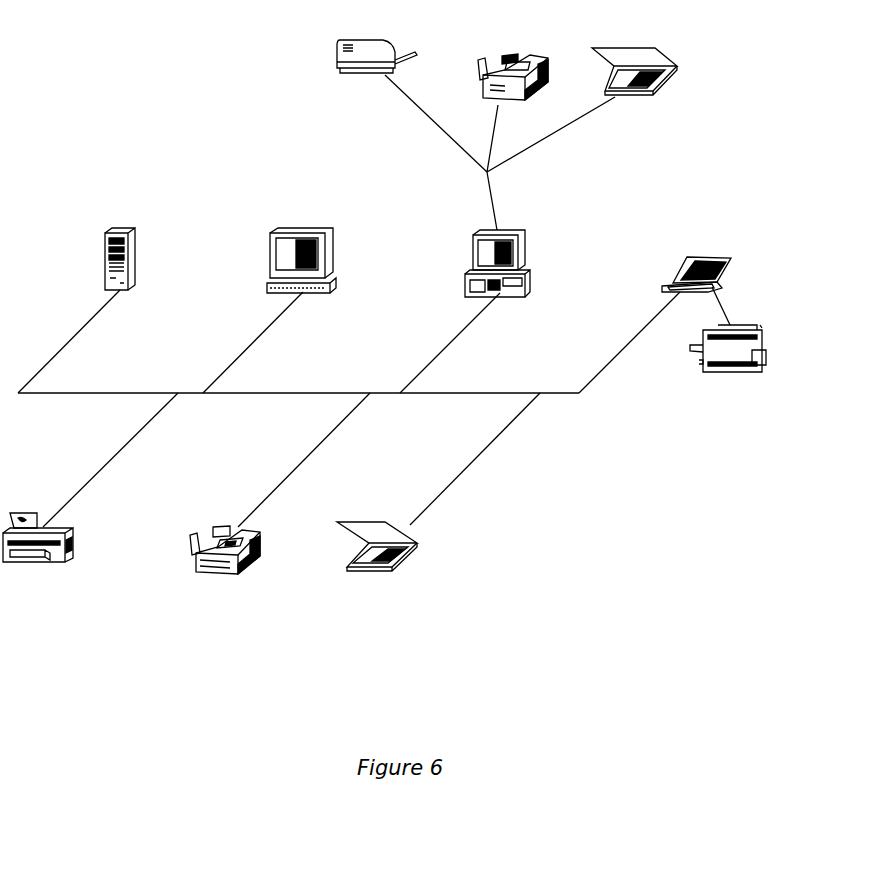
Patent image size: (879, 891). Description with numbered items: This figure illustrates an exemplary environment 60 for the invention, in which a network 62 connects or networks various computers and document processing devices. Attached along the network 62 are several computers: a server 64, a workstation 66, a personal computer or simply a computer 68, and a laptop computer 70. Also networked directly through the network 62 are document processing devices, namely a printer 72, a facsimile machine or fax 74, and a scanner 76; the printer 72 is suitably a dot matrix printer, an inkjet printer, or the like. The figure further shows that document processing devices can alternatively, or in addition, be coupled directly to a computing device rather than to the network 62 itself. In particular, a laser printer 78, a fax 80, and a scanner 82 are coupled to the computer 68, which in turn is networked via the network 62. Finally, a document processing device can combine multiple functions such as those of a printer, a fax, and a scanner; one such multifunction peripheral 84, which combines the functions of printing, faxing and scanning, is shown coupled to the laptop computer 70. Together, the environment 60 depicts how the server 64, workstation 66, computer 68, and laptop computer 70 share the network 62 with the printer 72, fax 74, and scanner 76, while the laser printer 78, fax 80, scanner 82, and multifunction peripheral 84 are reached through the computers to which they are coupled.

The environment 60 is at (150, 80).
The network 62 is at (128, 393).
The server 64 is at (105, 258).
The workstation 66 is at (270, 252).
The computer 68 is at (473, 258).
The laptop computer 70 is at (682, 268).
The printer 72 is at (73, 543).
The fax 74 is at (260, 553).
The scanner 76 is at (410, 555).
The laser printer 78 is at (337, 58).
The fax 80 is at (480, 75).
The scanner 82 is at (615, 83).
The multifunction peripheral 84 is at (766, 357).